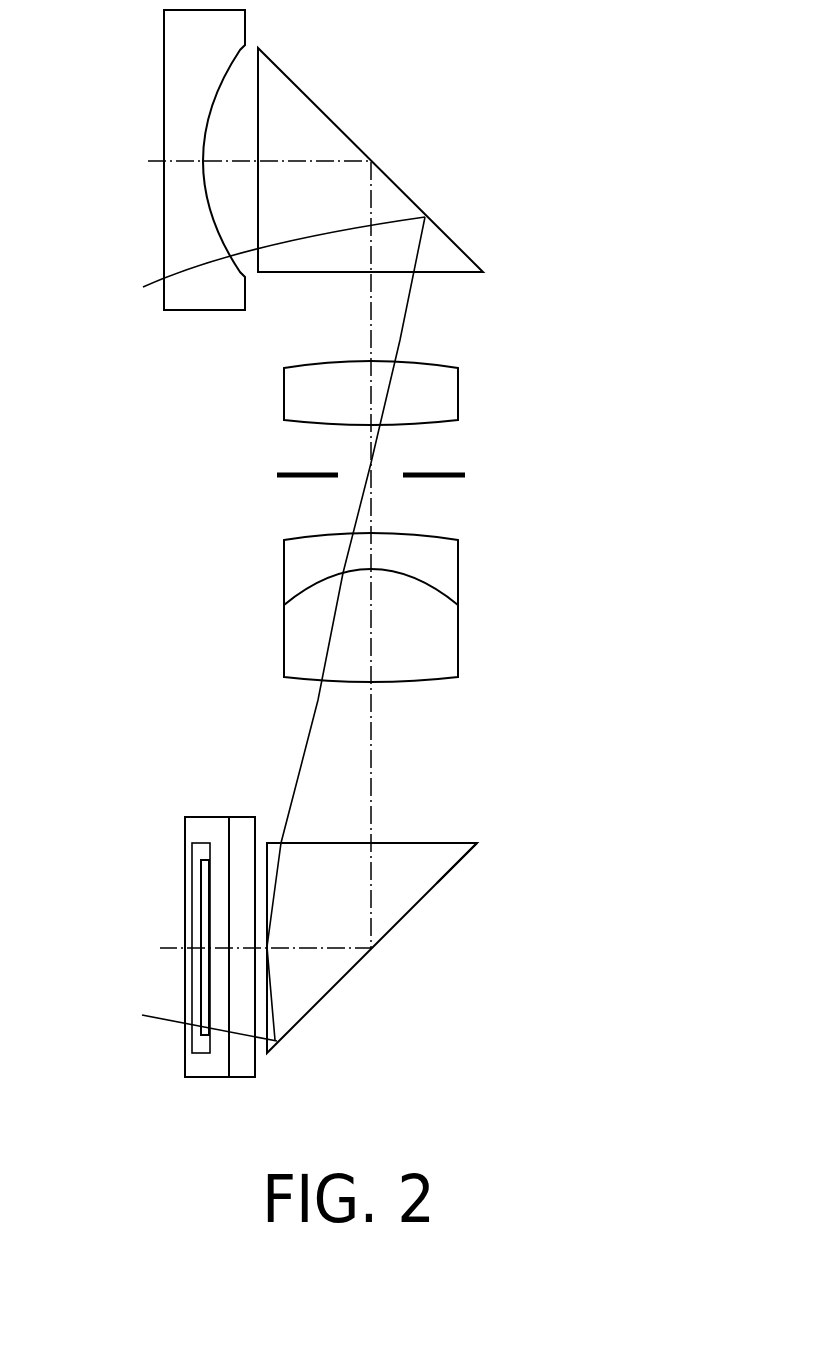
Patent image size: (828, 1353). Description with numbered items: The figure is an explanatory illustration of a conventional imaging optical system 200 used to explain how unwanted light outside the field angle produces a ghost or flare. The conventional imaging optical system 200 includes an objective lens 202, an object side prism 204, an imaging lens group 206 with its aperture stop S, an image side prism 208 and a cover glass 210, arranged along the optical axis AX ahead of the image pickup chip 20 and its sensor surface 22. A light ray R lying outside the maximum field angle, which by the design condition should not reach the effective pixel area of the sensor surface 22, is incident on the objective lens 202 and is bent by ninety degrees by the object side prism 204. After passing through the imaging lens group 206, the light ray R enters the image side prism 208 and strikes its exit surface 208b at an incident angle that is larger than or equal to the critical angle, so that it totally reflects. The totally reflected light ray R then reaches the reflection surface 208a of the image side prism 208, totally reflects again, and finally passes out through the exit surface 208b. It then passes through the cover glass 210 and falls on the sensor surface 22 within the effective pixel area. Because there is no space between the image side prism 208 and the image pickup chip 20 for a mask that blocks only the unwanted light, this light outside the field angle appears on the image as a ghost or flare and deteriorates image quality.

The conventional imaging optical system 200 is at (520, 588).
The objective lens 202 is at (176, 88).
The object side prism 204 is at (328, 137).
The imaging lens group 206 is at (267, 357).
The aperture stop S is at (445, 478).
The light ray R is at (302, 762).
The optical axis AX is at (372, 743).
The image side prism 208 is at (390, 906).
The reflection surface 208a is at (437, 880).
The exit surface 208b is at (268, 999).
The cover glass 210 is at (238, 1072).
The image pickup chip 20 is at (202, 1048).
The sensor surface 22 is at (213, 917).